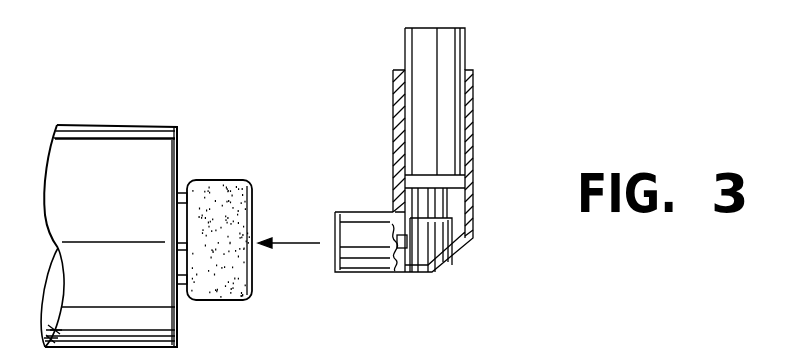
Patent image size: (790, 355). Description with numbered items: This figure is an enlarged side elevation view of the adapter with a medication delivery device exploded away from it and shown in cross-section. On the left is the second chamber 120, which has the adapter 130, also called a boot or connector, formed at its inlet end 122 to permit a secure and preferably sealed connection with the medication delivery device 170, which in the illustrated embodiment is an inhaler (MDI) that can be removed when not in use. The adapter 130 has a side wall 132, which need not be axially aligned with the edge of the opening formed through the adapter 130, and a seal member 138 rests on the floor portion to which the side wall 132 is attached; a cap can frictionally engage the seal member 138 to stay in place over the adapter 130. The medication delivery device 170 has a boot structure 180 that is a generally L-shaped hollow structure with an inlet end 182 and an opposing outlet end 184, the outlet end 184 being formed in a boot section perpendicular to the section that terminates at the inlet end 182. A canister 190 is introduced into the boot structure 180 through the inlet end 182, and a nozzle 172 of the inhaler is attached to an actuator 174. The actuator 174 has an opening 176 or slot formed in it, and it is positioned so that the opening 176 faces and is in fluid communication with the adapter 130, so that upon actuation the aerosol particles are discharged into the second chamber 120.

The second chamber 120 is at (72, 143).
The inlet end 122 is at (180, 143).
The adapter 130 is at (178, 258).
The side wall 132 is at (178, 220).
The seal member 138 is at (245, 195).
The medication delivery device 170 is at (475, 143).
The nozzle 172 is at (440, 257).
The actuator 174 is at (447, 260).
The opening 176 is at (402, 250).
The boot structure 180 is at (368, 228).
The inlet end 182 is at (470, 69).
The outlet end 184 is at (333, 247).
The canister 190 is at (440, 48).